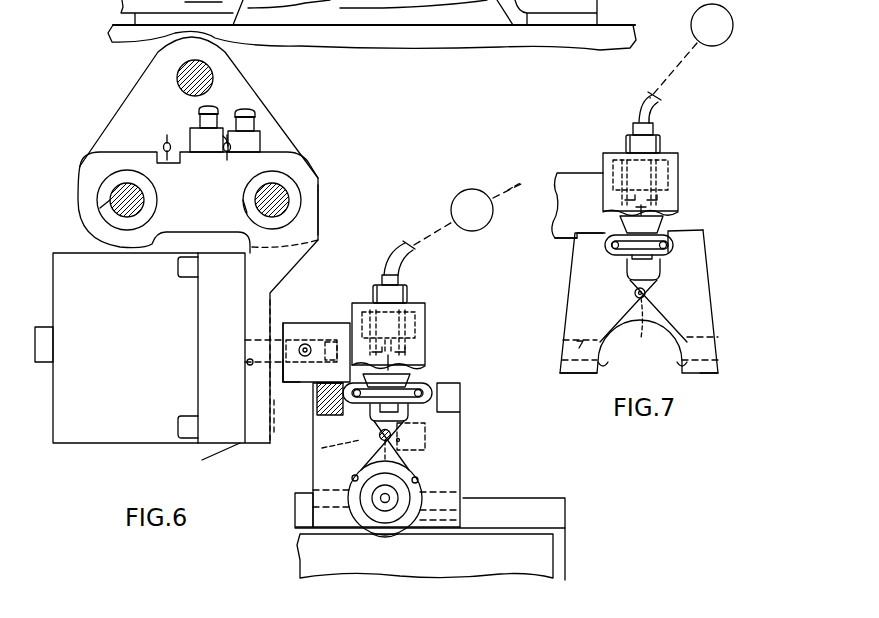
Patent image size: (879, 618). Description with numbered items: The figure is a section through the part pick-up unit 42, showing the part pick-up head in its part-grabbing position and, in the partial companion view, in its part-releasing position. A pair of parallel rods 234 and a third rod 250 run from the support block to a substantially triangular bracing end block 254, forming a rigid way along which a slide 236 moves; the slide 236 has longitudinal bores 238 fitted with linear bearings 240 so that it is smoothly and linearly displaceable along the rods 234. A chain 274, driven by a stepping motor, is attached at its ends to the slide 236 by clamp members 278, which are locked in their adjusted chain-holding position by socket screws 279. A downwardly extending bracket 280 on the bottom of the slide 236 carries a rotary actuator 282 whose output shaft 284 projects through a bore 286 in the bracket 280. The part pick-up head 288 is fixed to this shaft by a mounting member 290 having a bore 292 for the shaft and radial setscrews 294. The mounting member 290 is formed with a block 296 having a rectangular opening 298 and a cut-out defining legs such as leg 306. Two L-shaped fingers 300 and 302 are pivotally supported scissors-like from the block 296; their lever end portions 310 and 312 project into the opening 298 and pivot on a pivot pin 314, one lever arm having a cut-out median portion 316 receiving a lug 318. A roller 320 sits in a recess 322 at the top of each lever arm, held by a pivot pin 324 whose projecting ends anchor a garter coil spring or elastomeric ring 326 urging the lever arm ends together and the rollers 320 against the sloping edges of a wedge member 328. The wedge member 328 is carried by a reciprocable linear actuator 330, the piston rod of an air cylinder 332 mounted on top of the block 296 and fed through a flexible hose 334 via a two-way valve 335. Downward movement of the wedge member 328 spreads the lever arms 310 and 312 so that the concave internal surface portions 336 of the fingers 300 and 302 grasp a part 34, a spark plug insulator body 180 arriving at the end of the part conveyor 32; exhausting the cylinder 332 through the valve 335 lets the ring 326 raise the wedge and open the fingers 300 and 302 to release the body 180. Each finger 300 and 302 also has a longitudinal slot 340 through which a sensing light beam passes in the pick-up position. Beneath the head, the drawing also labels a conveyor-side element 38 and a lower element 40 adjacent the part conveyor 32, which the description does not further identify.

In FIG. 6, the bracing end block 254 is at (143, 88).
In FIG. 6, the third rod 250 is at (213, 74).
In FIG. 6, the clamp member 278 is at (212, 137).
In FIG. 6, the socket screws 279 is at (210, 112).
In FIG. 6, the chain 274 is at (177, 122).
In FIG. 6, the rods 234 is at (110, 190).
In FIG. 6, the longitudinal bores 238 is at (97, 202).
In FIG. 6, the linear bearings 240 is at (100, 208).
In FIG. 6, the slide 236 is at (319, 200).
In FIG. 6, the rotary actuator 282 is at (90, 447).
In FIG. 6, the part pick-up unit 42 is at (200, 461).
In FIG. 7, the part pick-up unit 42 is at (552, 155).
In FIG. 6, the bracket 280 is at (267, 444).
In FIG. 6, the output shaft 284 is at (284, 323).
In FIG. 6, the bore 286 is at (246, 362).
In FIG. 6, the part pick-up head 288 is at (318, 323).
In FIG. 7, the part pick-up head 288 is at (590, 152).
In FIG. 6, the bore 292 is at (288, 338).
In FIG. 6, the setscrews 294 is at (310, 347).
In FIG. 6, the mounting member 290 is at (288, 370).
In FIG. 7, the mounting member 290 is at (556, 232).
In FIG. 6, the block 296 is at (427, 313).
In FIG. 7, the block 296 is at (681, 180).
In FIG. 6, the air cylinder 332 is at (409, 292).
In FIG. 7, the air cylinder 332 is at (661, 144).
In FIG. 6, the flexible hose 334 is at (404, 242).
In FIG. 7, the flexible hose 334 is at (658, 98).
In FIG. 6, the two-way valve 335 is at (471, 189).
In FIG. 7, the two-way valve 335 is at (734, 28).
In FIG. 6, the reciprocable linear actuator 330 is at (414, 351).
In FIG. 7, the reciprocable linear actuator 330 is at (664, 209).
In FIG. 6, the wedge member 328 is at (358, 372).
In FIG. 7, the wedge member 328 is at (613, 219).
In FIG. 6, the opening 298 is at (420, 368).
In FIG. 7, the opening 298 is at (673, 223).
In FIG. 6, the roller 320 is at (430, 382).
In FIG. 7, the roller 320 is at (700, 240).
In FIG. 6, the pivot pin 324 is at (345, 388).
In FIG. 7, the pivot pin 324 is at (620, 260).
In FIG. 6, the recess 322 is at (444, 389).
In FIG. 7, the recess 322 is at (688, 252).
In FIG. 6, the garter coil spring or elastomeric ring 326 is at (376, 412).
In FIG. 7, the garter coil spring or elastomeric ring 326 is at (632, 276).
In FIG. 6, the lug 318 is at (366, 448).
In FIG. 7, the lug 318 is at (625, 296).
In FIG. 6, the pivot pin 314 is at (398, 432).
In FIG. 7, the pivot pin 314 is at (648, 297).
In FIG. 6, the cut-out median portion 316 is at (428, 440).
In FIG. 7, the cut-out median portion 316 is at (650, 323).
In FIG. 6, the leg 306 is at (322, 448).
In FIG. 6, the lever end portion 312 is at (455, 419).
In FIG. 7, the lever end portion 312 is at (705, 301).
In FIG. 6, the lever end portion 310 is at (330, 478).
In FIG. 7, the lever end portion 310 is at (570, 324).
In FIG. 6, the longitudinal slot 340 is at (462, 494).
In FIG. 7, the longitudinal slot 340 is at (721, 345).
In FIG. 6, the concave internal surface portion 336 is at (420, 480).
In FIG. 7, the concave internal surface portion 336 is at (605, 364).
In FIG. 6, the finger 300 is at (325, 515).
In FIG. 7, the finger 300 is at (597, 374).
In FIG. 6, the finger 302 is at (442, 521).
In FIG. 7, the finger 302 is at (714, 369).
In FIG. 6, the support block 38 is at (531, 499).
In FIG. 6, the part conveyor 32 is at (546, 536).
In FIG. 6, the part 34 is at (404, 527).
In FIG. 6, the axle 40 is at (355, 536).
In FIG. 6, the spark plug insulator body 180 is at (377, 536).